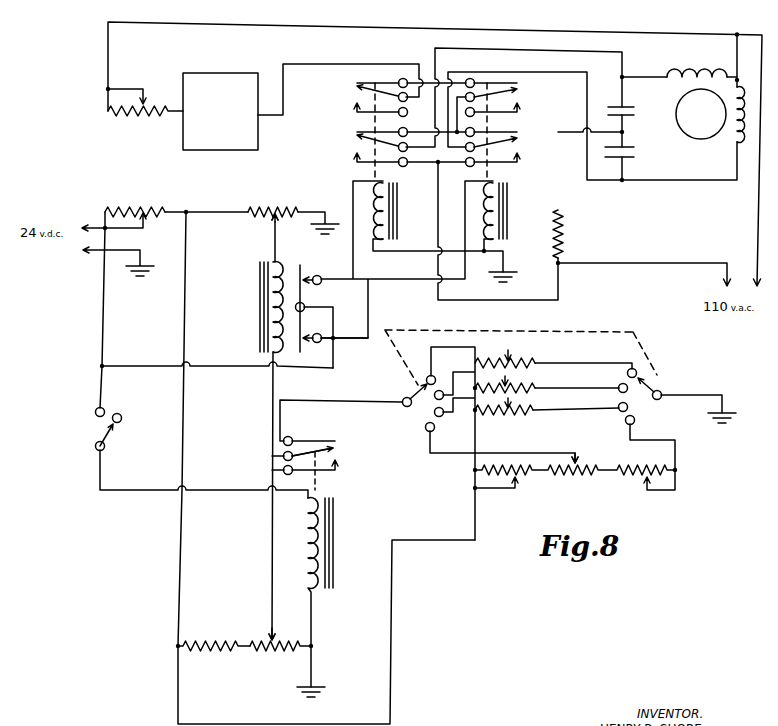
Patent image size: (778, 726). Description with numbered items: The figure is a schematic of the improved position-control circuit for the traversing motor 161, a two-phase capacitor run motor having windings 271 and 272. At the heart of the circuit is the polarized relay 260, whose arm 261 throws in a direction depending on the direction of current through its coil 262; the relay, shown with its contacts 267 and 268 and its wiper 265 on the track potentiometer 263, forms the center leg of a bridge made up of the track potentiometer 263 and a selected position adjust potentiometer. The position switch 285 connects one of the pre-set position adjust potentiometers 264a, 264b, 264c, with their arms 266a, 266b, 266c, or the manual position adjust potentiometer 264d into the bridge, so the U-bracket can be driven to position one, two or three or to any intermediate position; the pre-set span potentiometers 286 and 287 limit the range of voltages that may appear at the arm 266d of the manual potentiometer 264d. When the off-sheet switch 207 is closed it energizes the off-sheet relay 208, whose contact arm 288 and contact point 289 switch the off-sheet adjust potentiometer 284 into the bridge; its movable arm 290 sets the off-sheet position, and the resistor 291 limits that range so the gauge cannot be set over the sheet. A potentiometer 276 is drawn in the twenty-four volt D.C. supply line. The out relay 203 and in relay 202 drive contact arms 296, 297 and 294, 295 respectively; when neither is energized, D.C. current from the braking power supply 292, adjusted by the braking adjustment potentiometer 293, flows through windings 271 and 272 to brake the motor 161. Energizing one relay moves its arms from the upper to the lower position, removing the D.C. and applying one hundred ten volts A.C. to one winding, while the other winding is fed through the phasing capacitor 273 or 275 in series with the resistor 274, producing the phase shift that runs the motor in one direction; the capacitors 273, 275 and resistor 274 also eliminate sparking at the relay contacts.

The braking adjustment potentiometer 293 is at (134, 128).
The braking power supply 292 is at (239, 152).
The potentiometer 276 is at (133, 201).
The track potentiometer 263 is at (263, 205).
The wiper of potentiometer 263 265 is at (272, 226).
The coil 262 is at (290, 250).
The polarized relay 260 is at (251, 290).
The relay contact 267 is at (316, 265).
The arm 261 is at (306, 296).
The relay contact 268 is at (330, 339).
The off-sheet switch 207 is at (113, 431).
The contact point 289 is at (283, 467).
The contact arm 288 is at (337, 443).
The off-sheet relay 208 is at (307, 537).
The resistor 291 is at (190, 637).
The movable arm 290 is at (274, 638).
The off-sheet adjust potentiometer 284 is at (288, 653).
The contact arm 296 is at (350, 92).
The contact arm 297 is at (344, 139).
The out relay 203 is at (398, 213).
The in relay 202 is at (508, 208).
The contact arm 294 is at (525, 92).
The contact arm 295 is at (519, 146).
The winding 271 is at (696, 64).
The winding 272 is at (730, 135).
The traversing motor 161 is at (676, 132).
The phasing capacitor 275 is at (652, 97).
The phasing capacitor 273 is at (633, 158).
The resistor 274 is at (565, 223).
The position switch 285 is at (422, 399).
The position adjust potentiometer 264a is at (535, 362).
The wiper 266a is at (512, 339).
The position adjust potentiometer 264b is at (549, 387).
The wiper 266b is at (512, 384).
The position adjust potentiometer 264c is at (530, 412).
The wiper 266c is at (510, 401).
The position adjust potentiometer 264d is at (575, 481).
The arm 266d is at (611, 444).
The potentiometer 286 is at (522, 480).
The potentiometer 287 is at (633, 483).